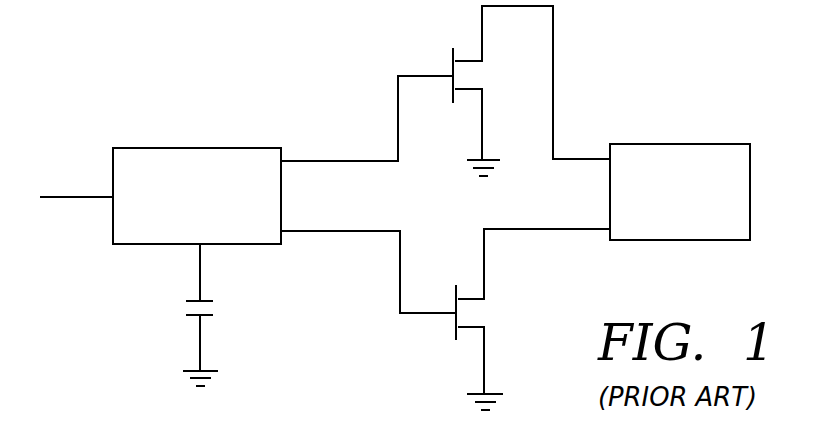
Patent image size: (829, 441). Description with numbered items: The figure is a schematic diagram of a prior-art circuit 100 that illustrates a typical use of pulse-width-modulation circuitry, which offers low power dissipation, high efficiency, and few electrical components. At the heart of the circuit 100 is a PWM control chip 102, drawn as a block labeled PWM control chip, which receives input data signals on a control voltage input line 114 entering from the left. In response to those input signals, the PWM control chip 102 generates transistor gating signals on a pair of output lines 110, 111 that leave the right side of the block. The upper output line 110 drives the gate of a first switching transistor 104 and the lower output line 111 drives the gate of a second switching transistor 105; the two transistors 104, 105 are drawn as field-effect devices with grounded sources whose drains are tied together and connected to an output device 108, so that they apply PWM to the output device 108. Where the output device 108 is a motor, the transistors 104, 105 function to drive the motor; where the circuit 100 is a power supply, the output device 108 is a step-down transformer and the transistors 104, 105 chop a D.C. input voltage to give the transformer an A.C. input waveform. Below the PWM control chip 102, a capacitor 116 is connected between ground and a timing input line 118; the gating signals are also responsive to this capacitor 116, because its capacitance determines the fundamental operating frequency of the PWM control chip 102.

The circuit 100 is at (220, 83).
The PWM control chip 102 is at (203, 148).
The switching transistor 104 is at (436, 53).
The switching transistor 105 is at (435, 338).
The output device 108 is at (660, 144).
The output line 110 is at (340, 161).
The output line 111 is at (340, 231).
The control voltage input line 114 is at (62, 197).
The capacitor 116 is at (193, 317).
The timing input line 118 is at (199, 275).